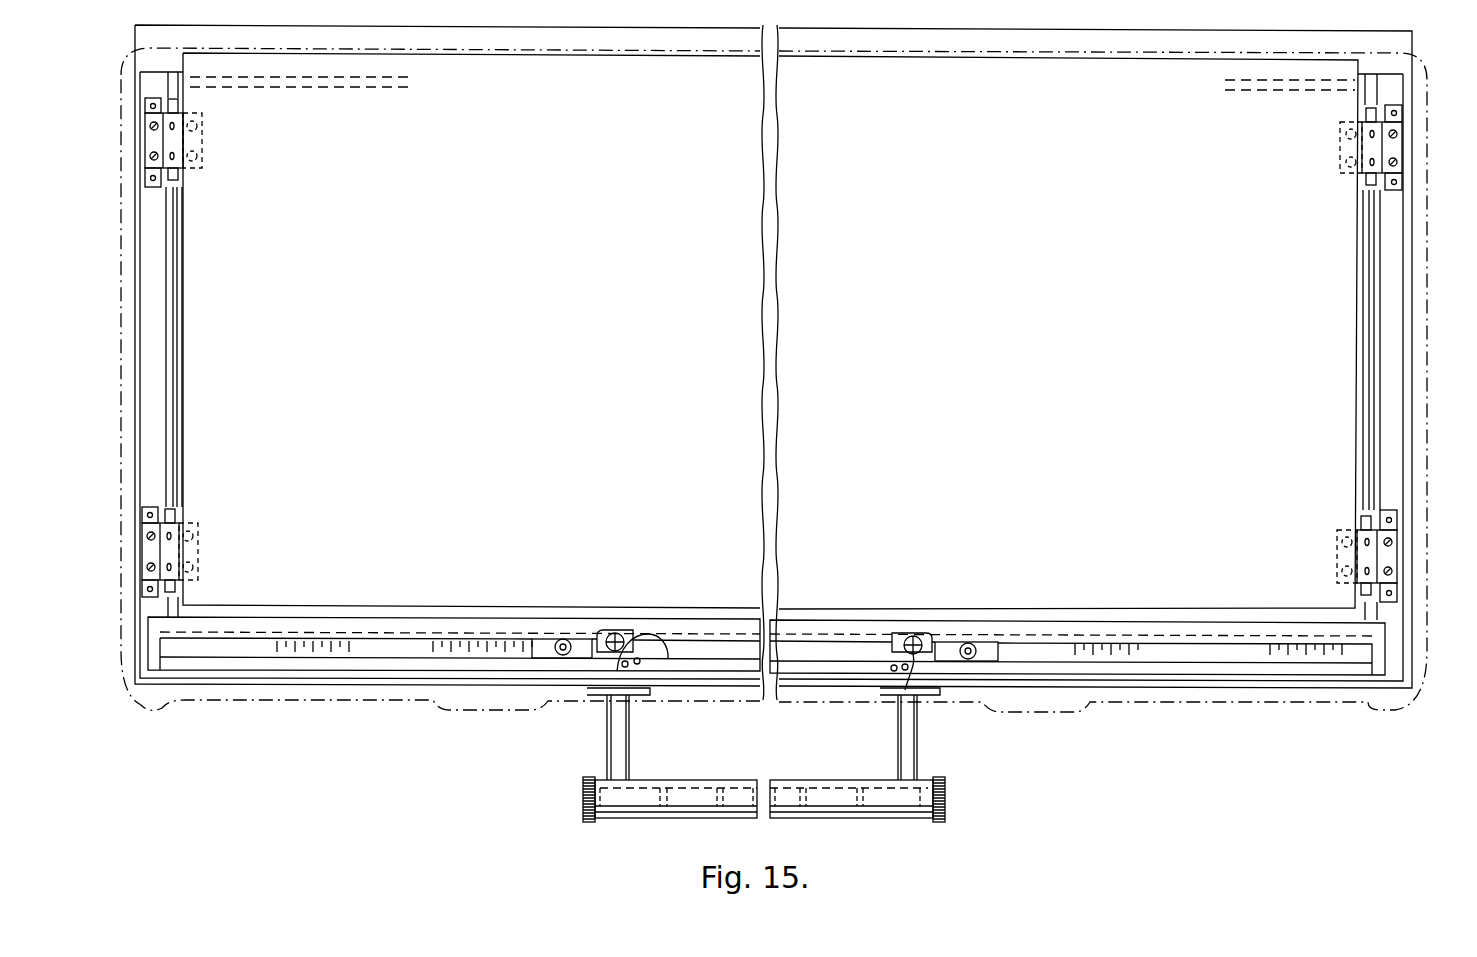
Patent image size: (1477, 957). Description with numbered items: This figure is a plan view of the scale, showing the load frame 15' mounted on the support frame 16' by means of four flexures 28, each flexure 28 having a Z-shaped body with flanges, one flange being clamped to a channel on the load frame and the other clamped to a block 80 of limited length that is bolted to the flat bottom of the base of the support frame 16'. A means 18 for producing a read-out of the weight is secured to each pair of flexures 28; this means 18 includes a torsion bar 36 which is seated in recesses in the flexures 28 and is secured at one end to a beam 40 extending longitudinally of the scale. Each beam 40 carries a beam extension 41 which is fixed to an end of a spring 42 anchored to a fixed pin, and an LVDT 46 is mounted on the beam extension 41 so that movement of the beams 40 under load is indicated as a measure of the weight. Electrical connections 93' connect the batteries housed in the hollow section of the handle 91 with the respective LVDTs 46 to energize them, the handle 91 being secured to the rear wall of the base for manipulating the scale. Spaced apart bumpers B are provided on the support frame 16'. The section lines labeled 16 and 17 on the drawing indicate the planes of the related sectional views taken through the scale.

The load frame 15' is at (770, 362).
The support frame 16' is at (793, 368).
The section line 16 is at (767, 678).
The section line 17 is at (88, 587).
The means for producing a read-out of the weight 18 is at (262, 654).
The flexure 28 is at (178, 160).
The torsion bar 36 is at (157, 352).
The beam 40 is at (412, 655).
The beam extension 41 is at (540, 659).
The spring 42 is at (618, 631).
The LVDT 46 is at (566, 638).
The block 80 is at (150, 180).
The handle 91 is at (690, 821).
The electrical connections 93' is at (765, 662).
The bumpers B is at (152, 704).